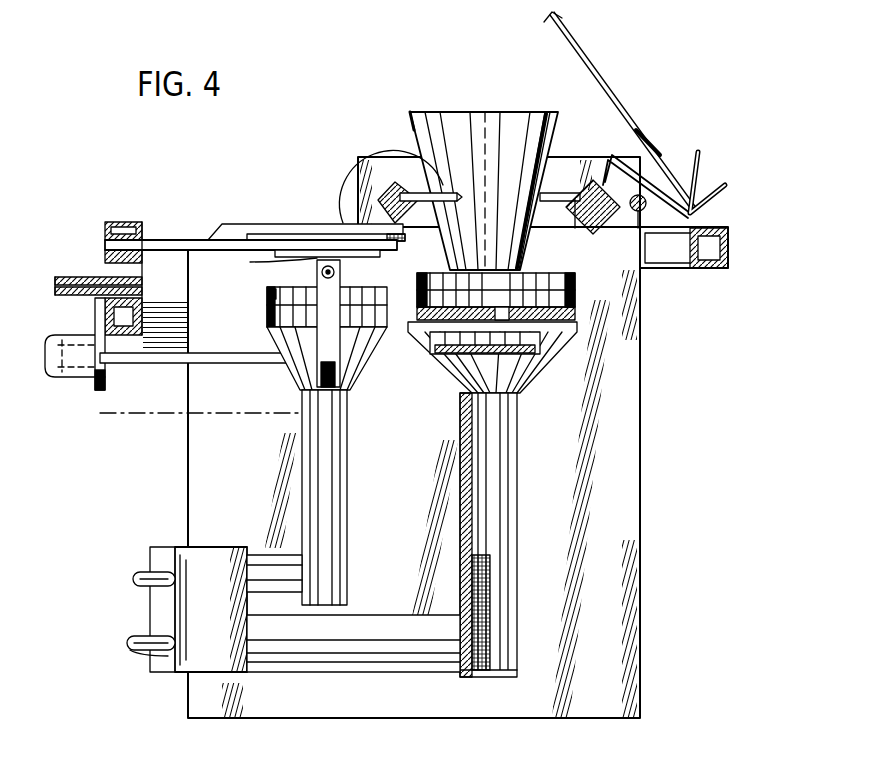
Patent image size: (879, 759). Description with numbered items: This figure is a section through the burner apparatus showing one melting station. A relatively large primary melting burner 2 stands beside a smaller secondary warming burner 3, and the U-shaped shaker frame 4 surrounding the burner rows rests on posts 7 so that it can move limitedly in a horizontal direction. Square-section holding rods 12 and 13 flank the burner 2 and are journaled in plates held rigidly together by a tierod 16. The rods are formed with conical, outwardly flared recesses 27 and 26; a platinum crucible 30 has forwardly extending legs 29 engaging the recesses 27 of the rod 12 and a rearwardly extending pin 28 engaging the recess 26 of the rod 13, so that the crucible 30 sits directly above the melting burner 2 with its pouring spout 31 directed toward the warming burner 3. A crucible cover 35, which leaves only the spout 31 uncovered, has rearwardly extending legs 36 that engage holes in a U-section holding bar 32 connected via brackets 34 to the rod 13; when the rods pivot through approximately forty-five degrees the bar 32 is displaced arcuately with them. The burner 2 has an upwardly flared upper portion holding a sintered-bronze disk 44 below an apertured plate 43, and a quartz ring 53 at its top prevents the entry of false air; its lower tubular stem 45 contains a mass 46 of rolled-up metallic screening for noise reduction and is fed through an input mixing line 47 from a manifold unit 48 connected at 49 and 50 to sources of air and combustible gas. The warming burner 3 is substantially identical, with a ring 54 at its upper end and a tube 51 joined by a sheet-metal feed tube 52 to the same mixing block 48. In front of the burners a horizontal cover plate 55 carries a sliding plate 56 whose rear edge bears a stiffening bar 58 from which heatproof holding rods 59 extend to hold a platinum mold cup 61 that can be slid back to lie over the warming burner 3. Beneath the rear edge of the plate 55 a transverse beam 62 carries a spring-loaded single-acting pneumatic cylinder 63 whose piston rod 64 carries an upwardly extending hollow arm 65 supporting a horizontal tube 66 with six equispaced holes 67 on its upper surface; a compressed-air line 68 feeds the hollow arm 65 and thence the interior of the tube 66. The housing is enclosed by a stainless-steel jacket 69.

The melting burner 2 is at (540, 365).
The warming burner 3 is at (352, 385).
The shaker frame 4 is at (705, 268).
The post 7 is at (167, 320).
The holding rod 12 is at (410, 228).
The holding rod 13 is at (600, 230).
The tierod 16 is at (655, 270).
The recess 26 is at (575, 190).
The recess 27 is at (398, 190).
The pin 28 is at (570, 215).
The leg 29 is at (347, 207).
The crucible 30 is at (470, 125).
The pouring spout 31 is at (414, 112).
The holding bar 32 is at (697, 152).
The bracket 34 is at (612, 157).
The crucible cover 35 is at (603, 72).
The holding formation 36 is at (662, 150).
The plate 43 is at (435, 352).
The sintered-bronze disk 44 is at (458, 400).
The stem 45 is at (512, 500).
The mass of metallic screening 46 is at (472, 598).
The input mixing line 47 is at (315, 660).
The manifold unit 48 is at (218, 560).
The air connection 49 is at (140, 652).
The gas connection 50 is at (140, 575).
The tube 51 is at (340, 500).
The feed tube 52 is at (280, 560).
The quartz ring 53 is at (578, 295).
The ring 54 is at (270, 293).
The cover plate 55 is at (55, 288).
The sliding plate 56 is at (95, 278).
The stiffening bar 58 is at (120, 222).
The holding rod 59 is at (172, 242).
The mold cup 61 is at (272, 235).
The transverse beam 62 is at (105, 310).
The pneumatic cylinder 63 is at (78, 380).
The piston rod 64 is at (215, 363).
The hollow arm 65 is at (303, 378).
The tube 66 is at (340, 270).
The holes 67 is at (250, 262).
The compressed-air line 68 is at (160, 415).
The stainless-steel jacket 69 is at (610, 660).